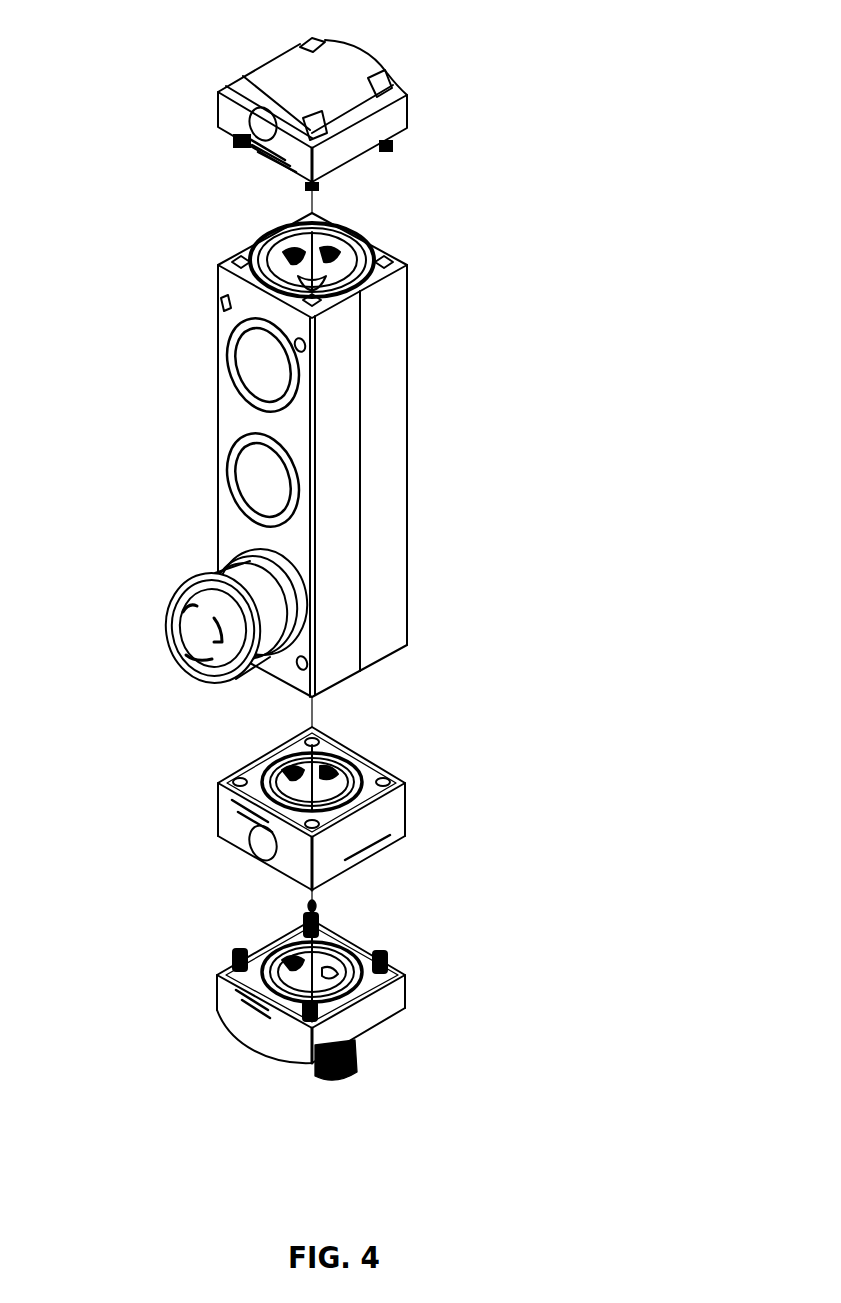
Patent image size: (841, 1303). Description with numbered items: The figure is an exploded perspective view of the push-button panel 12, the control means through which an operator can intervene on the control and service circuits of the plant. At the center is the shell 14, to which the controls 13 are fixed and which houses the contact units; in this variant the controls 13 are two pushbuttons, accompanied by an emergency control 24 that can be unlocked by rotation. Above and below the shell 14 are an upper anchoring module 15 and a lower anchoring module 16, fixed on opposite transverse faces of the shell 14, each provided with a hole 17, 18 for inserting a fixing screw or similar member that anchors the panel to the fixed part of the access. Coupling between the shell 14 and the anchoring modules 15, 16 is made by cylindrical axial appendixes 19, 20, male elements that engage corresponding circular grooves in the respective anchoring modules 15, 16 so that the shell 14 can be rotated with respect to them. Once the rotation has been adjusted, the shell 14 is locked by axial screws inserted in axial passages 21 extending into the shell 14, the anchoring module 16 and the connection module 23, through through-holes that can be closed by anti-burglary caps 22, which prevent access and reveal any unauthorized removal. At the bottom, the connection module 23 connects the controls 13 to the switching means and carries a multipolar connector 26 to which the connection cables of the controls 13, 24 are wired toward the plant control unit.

The push-button panel 12 is at (631, 172).
The controls 13 is at (257, 368).
The shell 14 is at (311, 462).
The upper anchoring module 15 is at (297, 95).
The lower anchoring module 16 is at (327, 808).
The hole 17 is at (217, 125).
The hole 18 is at (262, 840).
The cylindrical axial appendix 19 is at (263, 238).
The cylindrical axial appendix 20 is at (355, 687).
The axial passages 21 is at (355, 300).
The anti-burglary caps 22 is at (262, 80).
The connection module 23 is at (257, 1025).
The emergency control 24 is at (167, 623).
The multipolar connector 26 is at (340, 1080).